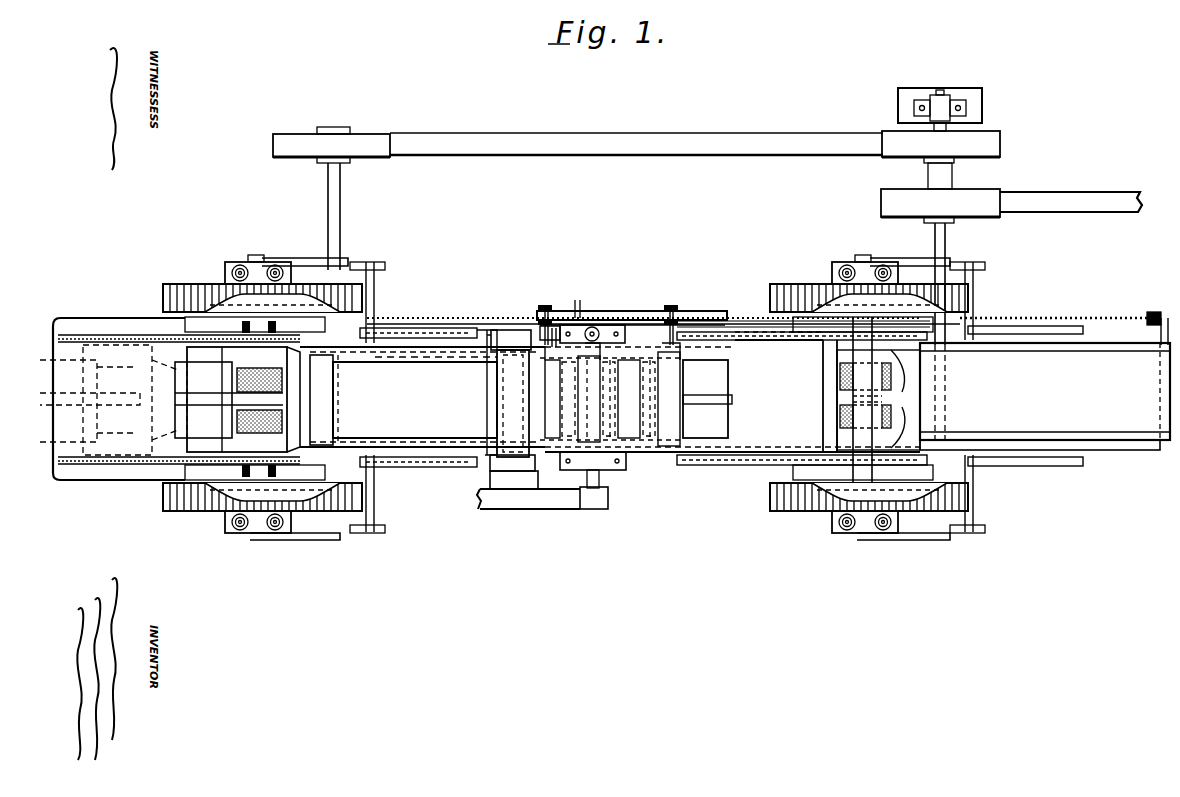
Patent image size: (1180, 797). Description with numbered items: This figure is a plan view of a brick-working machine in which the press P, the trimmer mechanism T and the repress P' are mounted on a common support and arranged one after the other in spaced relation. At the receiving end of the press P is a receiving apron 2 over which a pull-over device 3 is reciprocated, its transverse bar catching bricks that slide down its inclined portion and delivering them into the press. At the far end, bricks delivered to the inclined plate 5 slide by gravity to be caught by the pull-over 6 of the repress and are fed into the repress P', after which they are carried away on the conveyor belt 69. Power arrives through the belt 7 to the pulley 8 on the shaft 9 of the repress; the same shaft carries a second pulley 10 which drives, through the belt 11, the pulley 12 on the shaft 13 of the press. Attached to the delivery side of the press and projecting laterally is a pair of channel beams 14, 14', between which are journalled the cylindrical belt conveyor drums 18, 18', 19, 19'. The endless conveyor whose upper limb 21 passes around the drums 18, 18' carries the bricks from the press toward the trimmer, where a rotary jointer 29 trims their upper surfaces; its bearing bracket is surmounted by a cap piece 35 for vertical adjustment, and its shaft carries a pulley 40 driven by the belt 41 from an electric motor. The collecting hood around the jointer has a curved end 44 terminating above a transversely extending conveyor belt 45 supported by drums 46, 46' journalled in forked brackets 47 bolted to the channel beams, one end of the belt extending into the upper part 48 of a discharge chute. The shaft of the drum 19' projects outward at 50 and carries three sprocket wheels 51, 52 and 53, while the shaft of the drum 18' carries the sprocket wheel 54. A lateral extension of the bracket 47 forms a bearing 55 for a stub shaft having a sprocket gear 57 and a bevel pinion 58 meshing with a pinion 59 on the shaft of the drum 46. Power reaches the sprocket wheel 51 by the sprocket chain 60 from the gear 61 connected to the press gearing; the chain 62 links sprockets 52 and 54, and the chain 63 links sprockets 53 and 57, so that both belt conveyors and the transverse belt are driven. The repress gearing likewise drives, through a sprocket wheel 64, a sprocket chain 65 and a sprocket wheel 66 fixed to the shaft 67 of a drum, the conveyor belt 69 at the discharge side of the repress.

The receiving apron 2 is at (105, 318).
The pull-over device 3 is at (178, 378).
The inclined plate 5 is at (715, 424).
The pull-over of the repress 6 is at (827, 399).
The belt 7 is at (1085, 193).
The pulley 8 is at (1000, 190).
The shaft of the repress 9 is at (946, 232).
The pulley 10 is at (992, 127).
The belt 11 is at (760, 134).
The pulley 12 is at (287, 132).
The shaft of the press 13 is at (328, 180).
The channel beam 14 is at (418, 305).
The channel beam 14' is at (418, 519).
The belt conveyor drum 18 is at (422, 397).
The belt conveyor drum 18' is at (576, 527).
The belt conveyor drum 19 is at (690, 510).
The belt conveyor drum 19' is at (711, 498).
The upper limb of the endless belt conveyor 21 is at (425, 325).
The rotary jointer 29 is at (636, 452).
The cap piece 35 is at (628, 330).
The pulley 40 is at (598, 508).
The belt 41 is at (545, 508).
The curved end of the hood 44 is at (505, 403).
The transversely extending conveyor belt 45 is at (488, 338).
The supporting drum 46 is at (504, 282).
The supporting drum 46' is at (479, 491).
The forked bracket 47 is at (492, 338).
The upper part of the discharge chute 48 is at (522, 480).
The projecting shaft of the conveyor drum 50 is at (702, 331).
The sprocket wheel 51 is at (692, 322).
The sprocket wheel 52 is at (682, 322).
The sprocket wheel 53 is at (668, 316).
The sprocket wheel 54 is at (576, 316).
The bearing 55 is at (542, 323).
The sprocket gear 57 is at (553, 323).
The bevel pinion 58 is at (556, 343).
The bevel pinion 59 is at (548, 338).
The sprocket chain 60 is at (472, 322).
The gear 61 is at (373, 300).
The sprocket chain 62 is at (626, 316).
The sprocket chain 63 is at (590, 316).
The sprocket wheel 64 is at (982, 325).
The sprocket chain 65 is at (1085, 316).
The sprocket wheel 66 is at (1160, 315).
The shaft 67 is at (1150, 340).
The conveyor belt 69 is at (1120, 446).
The press P is at (262, 384).
The repress P' is at (869, 383).
The trimmer mechanism T is at (611, 288).